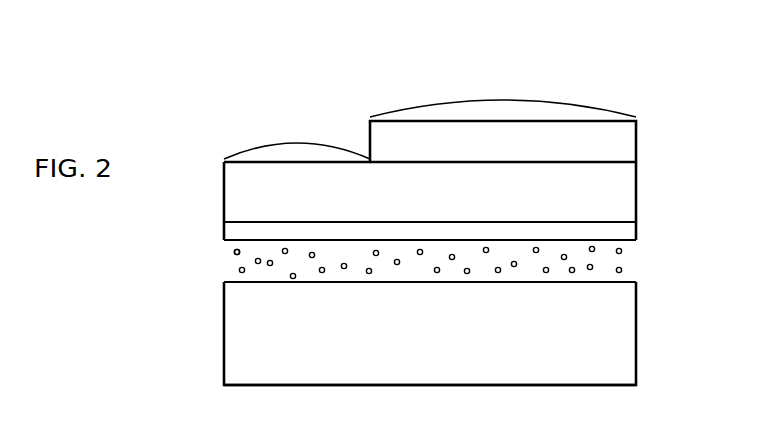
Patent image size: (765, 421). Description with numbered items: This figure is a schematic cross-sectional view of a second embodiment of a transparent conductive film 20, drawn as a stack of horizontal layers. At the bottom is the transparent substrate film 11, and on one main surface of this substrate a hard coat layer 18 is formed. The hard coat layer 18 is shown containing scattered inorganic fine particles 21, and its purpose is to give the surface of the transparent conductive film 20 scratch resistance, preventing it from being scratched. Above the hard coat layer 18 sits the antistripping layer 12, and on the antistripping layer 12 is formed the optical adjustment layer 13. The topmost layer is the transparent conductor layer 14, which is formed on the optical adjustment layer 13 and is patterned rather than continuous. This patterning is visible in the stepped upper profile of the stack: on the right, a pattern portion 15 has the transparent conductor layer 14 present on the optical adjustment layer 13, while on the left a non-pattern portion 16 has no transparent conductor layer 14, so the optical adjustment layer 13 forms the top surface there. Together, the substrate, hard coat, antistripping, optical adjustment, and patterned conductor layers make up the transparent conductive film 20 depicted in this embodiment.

The transparent substrate film 11 is at (636, 326).
The antistripping layer 12 is at (636, 231).
The optical adjustment layer 13 is at (636, 193).
The transparent conductor layer 14 is at (636, 142).
The pattern portion 15 is at (503, 93).
The non-pattern portion 16 is at (297, 137).
The hard coat layer 18 is at (636, 260).
The transparent conductive film 20 is at (643, 79).
The inorganic fine particles 21 is at (234, 252).